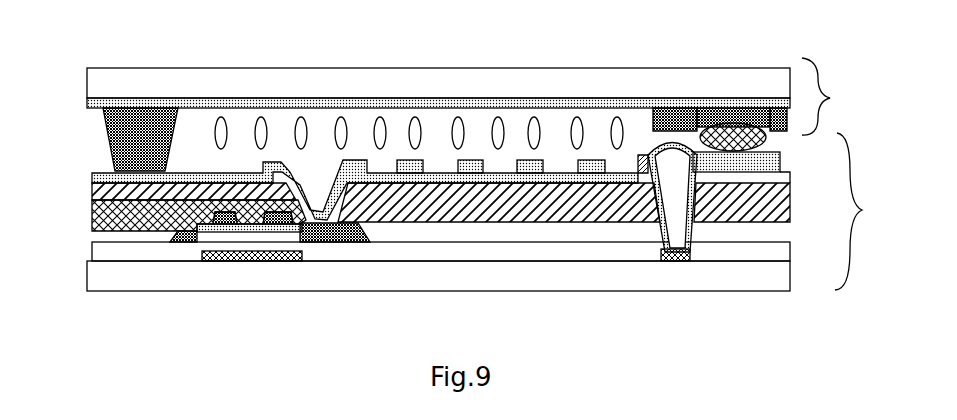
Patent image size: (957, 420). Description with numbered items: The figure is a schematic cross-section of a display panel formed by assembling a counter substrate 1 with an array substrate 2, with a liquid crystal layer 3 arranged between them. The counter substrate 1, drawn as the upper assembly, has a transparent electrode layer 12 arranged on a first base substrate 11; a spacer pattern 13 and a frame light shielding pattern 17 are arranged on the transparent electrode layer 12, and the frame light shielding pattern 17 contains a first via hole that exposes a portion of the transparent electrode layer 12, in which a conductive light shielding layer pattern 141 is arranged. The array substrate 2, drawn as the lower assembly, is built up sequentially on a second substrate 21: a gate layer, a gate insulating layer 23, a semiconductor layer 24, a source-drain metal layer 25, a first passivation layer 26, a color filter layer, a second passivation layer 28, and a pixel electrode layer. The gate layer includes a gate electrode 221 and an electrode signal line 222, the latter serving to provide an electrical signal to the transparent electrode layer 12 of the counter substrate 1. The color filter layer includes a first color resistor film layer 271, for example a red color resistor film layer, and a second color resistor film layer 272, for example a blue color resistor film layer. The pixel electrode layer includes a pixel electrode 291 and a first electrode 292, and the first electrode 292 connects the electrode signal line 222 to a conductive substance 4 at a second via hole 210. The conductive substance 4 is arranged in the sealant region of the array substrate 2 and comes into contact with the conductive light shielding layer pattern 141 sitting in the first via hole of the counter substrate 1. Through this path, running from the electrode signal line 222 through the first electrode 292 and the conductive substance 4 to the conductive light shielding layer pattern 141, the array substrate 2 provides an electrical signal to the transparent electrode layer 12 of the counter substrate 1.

The counter substrate 1 is at (833, 96).
The array substrate 2 is at (858, 211).
The liquid crystal layer 3 is at (418, 117).
The conductive substance 4 is at (766, 140).
The first base substrate 11 is at (338, 85).
The transparent electrode layer 12 is at (233, 103).
The spacer pattern 13 is at (135, 110).
The frame light shielding pattern 17 is at (672, 112).
The conductive light shielding layer pattern 141 is at (717, 110).
The second substrate 21 is at (98, 270).
The gate insulating layer 23 is at (120, 253).
The semiconductor layer 24 is at (243, 228).
The source-drain metal layer 25 is at (185, 238).
The first passivation layer 26 is at (270, 217).
The second passivation layer 28 is at (92, 173).
The second via hole 210 is at (712, 224).
The gate electrode 221 is at (285, 256).
The electrode signal line 222 is at (668, 252).
The first color resistor film layer 271 is at (95, 184).
The second color resistor film layer 272 is at (142, 230).
The pixel electrode 291 is at (343, 200).
The first electrode 292 is at (693, 225).